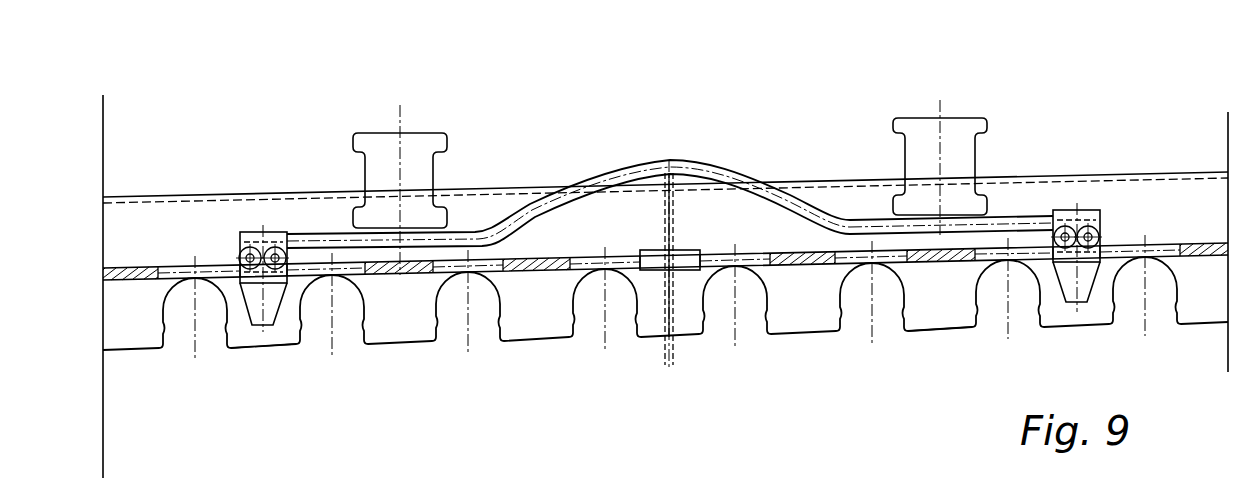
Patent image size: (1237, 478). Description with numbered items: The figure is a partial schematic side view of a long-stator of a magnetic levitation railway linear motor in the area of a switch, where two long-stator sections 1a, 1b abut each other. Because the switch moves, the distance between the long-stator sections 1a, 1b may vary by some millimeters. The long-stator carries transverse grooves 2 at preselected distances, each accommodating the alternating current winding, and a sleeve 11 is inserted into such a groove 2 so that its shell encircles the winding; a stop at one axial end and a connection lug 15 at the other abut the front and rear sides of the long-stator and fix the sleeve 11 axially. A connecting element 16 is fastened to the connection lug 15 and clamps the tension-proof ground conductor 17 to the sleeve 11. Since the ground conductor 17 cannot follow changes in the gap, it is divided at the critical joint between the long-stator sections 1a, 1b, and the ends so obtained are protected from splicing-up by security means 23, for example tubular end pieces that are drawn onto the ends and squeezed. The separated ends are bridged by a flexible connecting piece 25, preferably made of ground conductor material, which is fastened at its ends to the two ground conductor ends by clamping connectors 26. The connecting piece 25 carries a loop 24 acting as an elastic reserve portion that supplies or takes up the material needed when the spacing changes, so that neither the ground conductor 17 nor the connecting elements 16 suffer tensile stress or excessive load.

The long-stator section 1a is at (250, 356).
The long-stator section 1b is at (937, 338).
The groove 2 is at (744, 307).
The sleeve 11 is at (352, 300).
The connection lug 15 is at (316, 272).
The connecting element 16 is at (177, 272).
The ground conductor 17 is at (137, 268).
The security means 23 is at (687, 270).
The loop 24 is at (590, 175).
The flexible connecting piece 25 is at (870, 222).
The clamping connector 26 is at (260, 235).